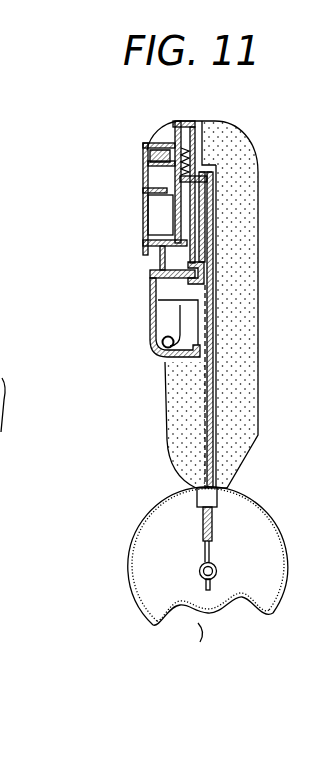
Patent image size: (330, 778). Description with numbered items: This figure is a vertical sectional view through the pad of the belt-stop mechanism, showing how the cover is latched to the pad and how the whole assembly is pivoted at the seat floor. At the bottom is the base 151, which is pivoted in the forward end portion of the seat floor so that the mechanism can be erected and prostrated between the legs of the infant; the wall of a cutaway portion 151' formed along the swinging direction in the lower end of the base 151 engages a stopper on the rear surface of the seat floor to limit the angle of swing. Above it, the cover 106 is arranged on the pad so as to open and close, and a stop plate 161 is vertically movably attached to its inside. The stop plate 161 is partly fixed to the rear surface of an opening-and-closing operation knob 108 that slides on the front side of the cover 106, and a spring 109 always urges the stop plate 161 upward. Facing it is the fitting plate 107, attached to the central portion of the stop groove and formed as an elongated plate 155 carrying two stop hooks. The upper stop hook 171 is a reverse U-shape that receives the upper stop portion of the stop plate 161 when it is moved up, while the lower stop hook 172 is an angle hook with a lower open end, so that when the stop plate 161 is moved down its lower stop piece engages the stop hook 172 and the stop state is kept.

The cover 106 is at (164, 126).
The fitting plate 107 is at (215, 227).
The opening-and-closing operation knob 108 is at (142, 220).
The spring 109 is at (218, 128).
The base 151 is at (171, 550).
The cutaway portion 151' is at (203, 647).
The elongated plate 155 is at (213, 421).
The stop plate 161 is at (157, 275).
The upper stop hook 171 is at (213, 163).
The lower stop hook 172 is at (203, 272).